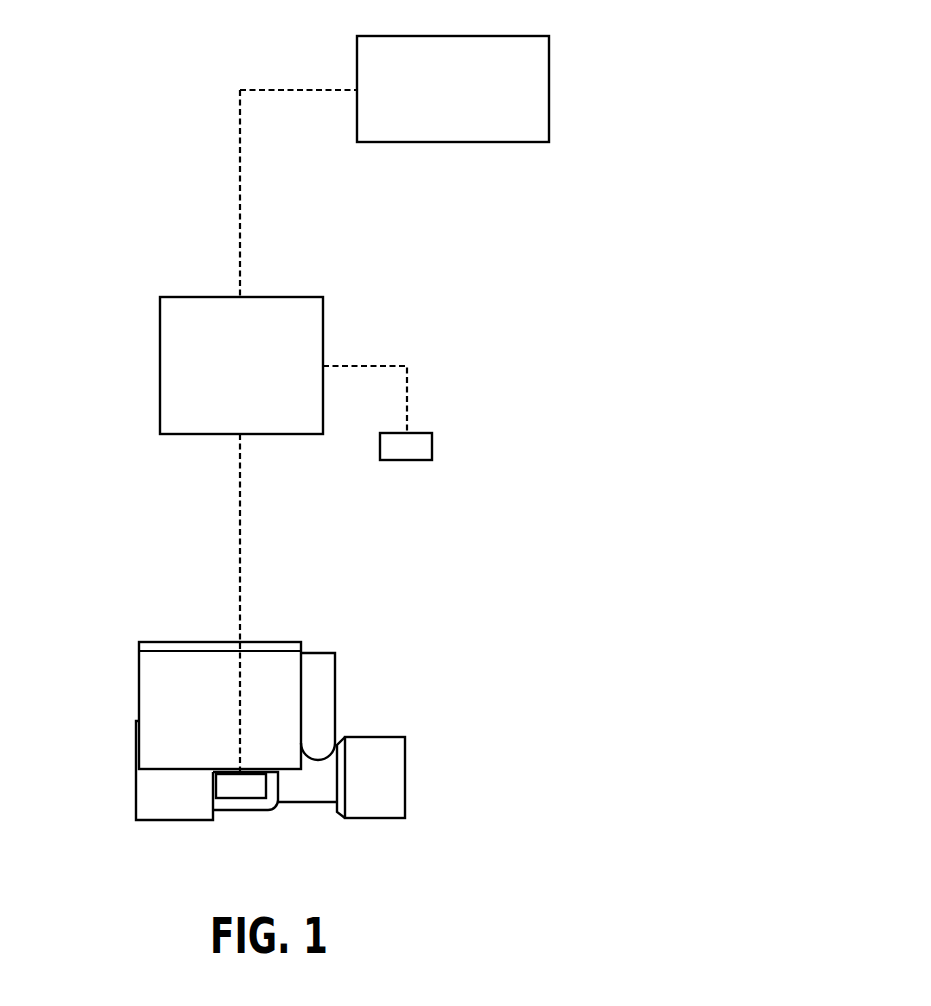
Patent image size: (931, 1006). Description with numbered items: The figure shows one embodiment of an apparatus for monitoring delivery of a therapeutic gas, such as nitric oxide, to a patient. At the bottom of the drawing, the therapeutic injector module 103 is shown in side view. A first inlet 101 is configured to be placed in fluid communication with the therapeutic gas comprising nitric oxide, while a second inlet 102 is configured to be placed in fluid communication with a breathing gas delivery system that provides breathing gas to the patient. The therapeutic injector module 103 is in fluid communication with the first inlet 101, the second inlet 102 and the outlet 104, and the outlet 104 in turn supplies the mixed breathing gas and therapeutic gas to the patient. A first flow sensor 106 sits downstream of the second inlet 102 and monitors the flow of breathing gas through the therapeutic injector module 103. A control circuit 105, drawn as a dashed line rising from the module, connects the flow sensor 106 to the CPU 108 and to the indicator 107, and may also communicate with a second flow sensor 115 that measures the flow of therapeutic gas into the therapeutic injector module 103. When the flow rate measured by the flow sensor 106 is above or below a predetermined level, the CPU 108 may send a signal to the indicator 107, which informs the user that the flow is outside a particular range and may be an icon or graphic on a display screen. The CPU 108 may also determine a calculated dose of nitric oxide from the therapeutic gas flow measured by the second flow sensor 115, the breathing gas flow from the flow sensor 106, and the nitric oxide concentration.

The first inlet 101 is at (317, 652).
The second inlet 102 is at (136, 773).
The therapeutic injector module 103 is at (163, 692).
The outlet 104 is at (405, 777).
The control circuit 105 is at (240, 523).
The first flow sensor 106 is at (240, 800).
The indicator 107 is at (549, 88).
The CPU 108 is at (160, 371).
The second flow sensor 115 is at (408, 460).